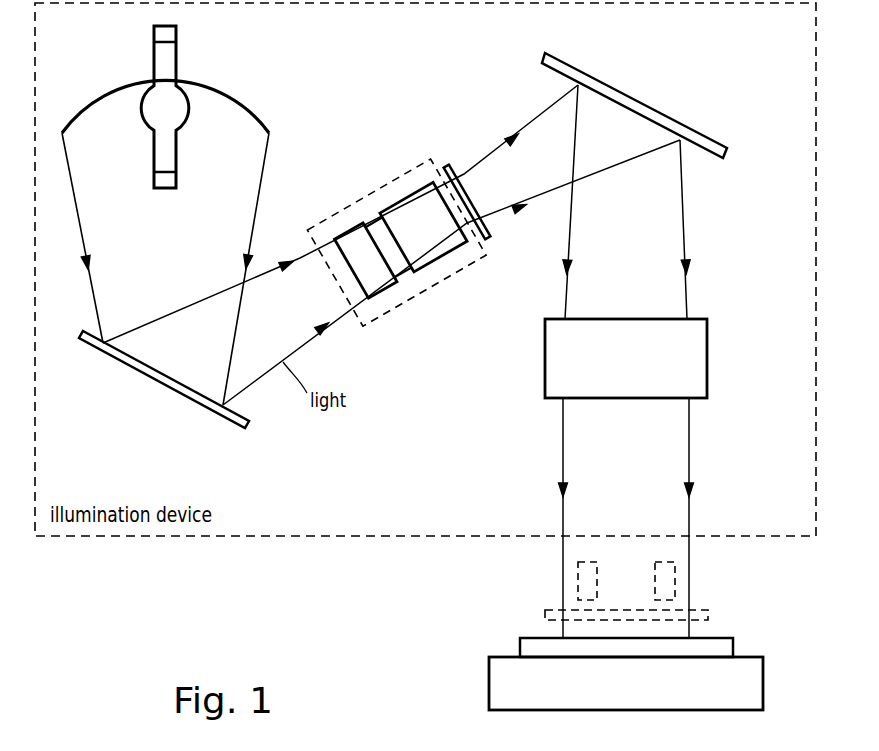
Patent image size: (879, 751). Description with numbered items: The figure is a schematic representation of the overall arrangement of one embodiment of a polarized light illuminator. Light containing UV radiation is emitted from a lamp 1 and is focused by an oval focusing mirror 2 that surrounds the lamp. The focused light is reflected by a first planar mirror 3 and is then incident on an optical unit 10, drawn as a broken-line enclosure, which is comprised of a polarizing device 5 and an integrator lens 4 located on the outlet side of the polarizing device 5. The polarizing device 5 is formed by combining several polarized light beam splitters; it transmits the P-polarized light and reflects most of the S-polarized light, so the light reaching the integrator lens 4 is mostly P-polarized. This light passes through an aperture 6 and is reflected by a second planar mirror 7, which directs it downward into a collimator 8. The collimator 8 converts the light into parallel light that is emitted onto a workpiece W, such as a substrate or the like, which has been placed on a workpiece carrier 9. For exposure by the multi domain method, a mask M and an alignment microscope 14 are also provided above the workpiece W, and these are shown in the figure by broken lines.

The lamp 1 is at (170, 61).
The oval focusing mirror 2 is at (252, 110).
The first planar mirror 3 is at (137, 370).
The integrator lens 4 is at (407, 192).
The polarizing device 5 is at (387, 292).
The aperture 6 is at (455, 168).
The second planar mirror 7 is at (668, 117).
The collimator 8 is at (707, 343).
The workpiece carrier 9 is at (489, 680).
The optical unit 10 is at (377, 318).
The alignment microscope 14 is at (667, 573).
The mask M is at (708, 613).
The workpiece W is at (733, 647).